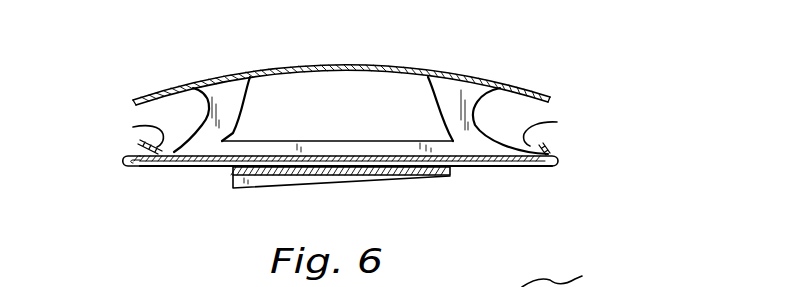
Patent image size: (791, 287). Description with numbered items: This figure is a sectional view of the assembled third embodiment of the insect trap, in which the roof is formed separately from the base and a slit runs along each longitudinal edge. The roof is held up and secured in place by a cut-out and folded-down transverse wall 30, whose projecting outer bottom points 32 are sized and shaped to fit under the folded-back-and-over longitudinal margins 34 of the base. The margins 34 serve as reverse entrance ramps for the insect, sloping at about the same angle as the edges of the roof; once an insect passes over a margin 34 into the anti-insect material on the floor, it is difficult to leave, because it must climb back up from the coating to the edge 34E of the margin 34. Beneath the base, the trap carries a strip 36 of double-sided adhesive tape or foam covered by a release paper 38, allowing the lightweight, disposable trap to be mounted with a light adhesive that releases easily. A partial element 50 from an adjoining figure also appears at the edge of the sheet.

The insert tray 30 is at (234, 116).
The sealing walls 32 is at (173, 152).
The cover lip 34 is at (140, 140).
The rolled edge of cover lip 34E is at (133, 127).
The bottom plate 36 is at (240, 169).
The wedge support 38 is at (235, 183).
The adjacent figure element 50 is at (582, 276).